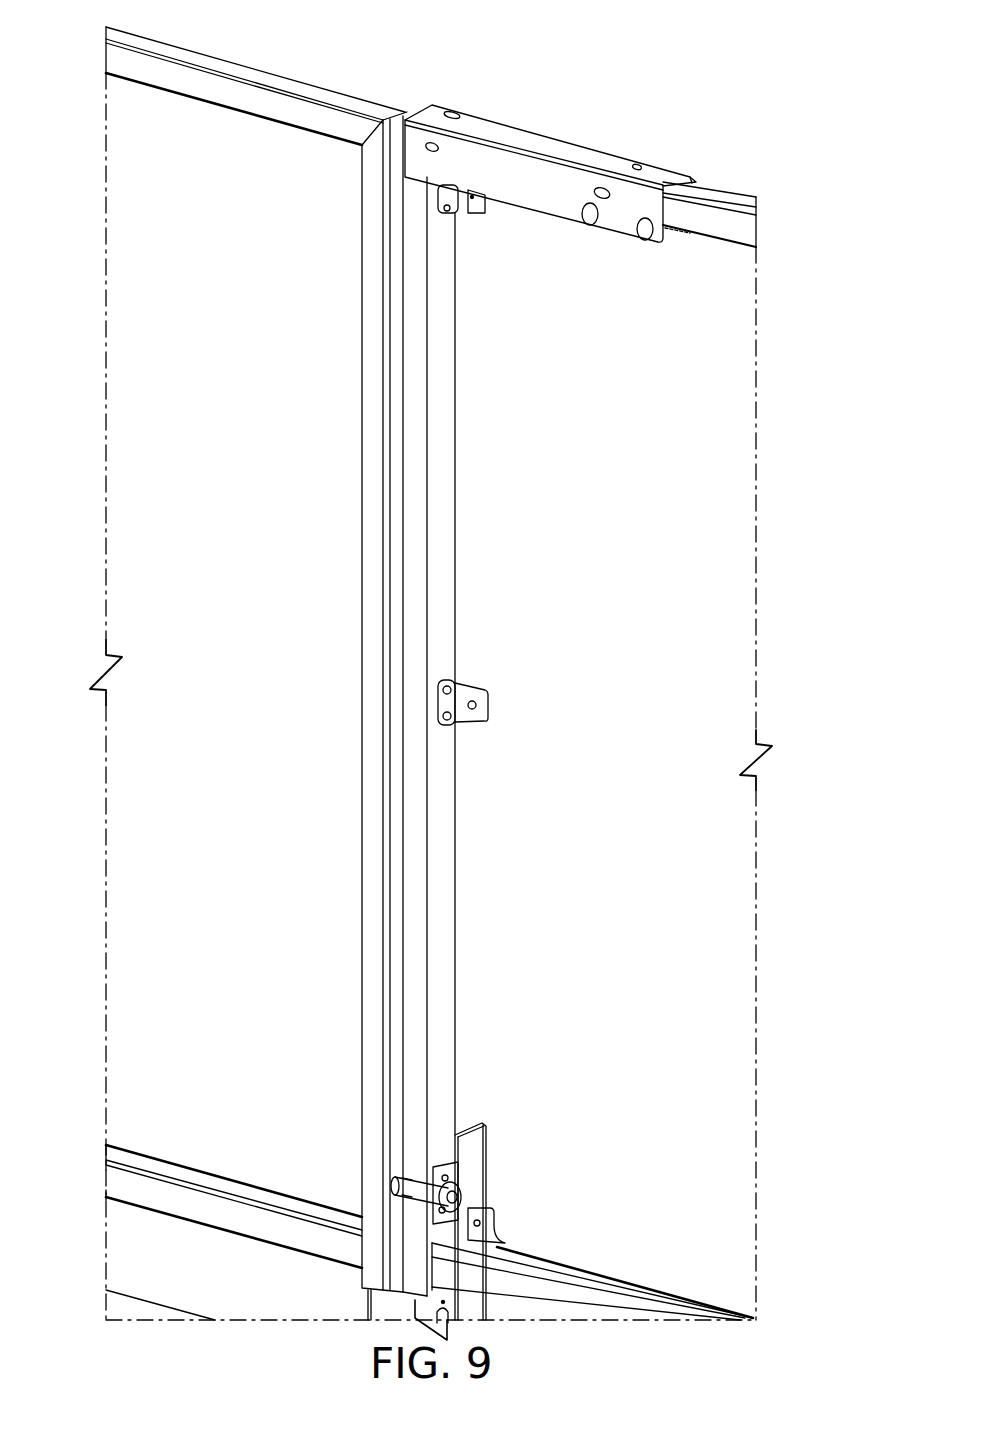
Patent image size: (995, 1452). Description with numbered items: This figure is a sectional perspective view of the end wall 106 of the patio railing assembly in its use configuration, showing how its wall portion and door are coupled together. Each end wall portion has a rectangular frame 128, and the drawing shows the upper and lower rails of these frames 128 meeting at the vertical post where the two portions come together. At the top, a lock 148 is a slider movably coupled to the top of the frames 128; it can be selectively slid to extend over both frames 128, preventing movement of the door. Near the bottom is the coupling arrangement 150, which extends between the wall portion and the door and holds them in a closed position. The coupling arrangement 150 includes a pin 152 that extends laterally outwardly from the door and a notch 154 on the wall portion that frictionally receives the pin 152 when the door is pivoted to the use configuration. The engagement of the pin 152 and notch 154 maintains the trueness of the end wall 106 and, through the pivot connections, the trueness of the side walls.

The end wall 106 is at (719, 116).
The rectangular frame 128 is at (228, 87).
The lock 148 is at (528, 138).
The coupling arrangement 150 is at (541, 1225).
The pin 152 is at (393, 1186).
The notch 154 is at (452, 1176).